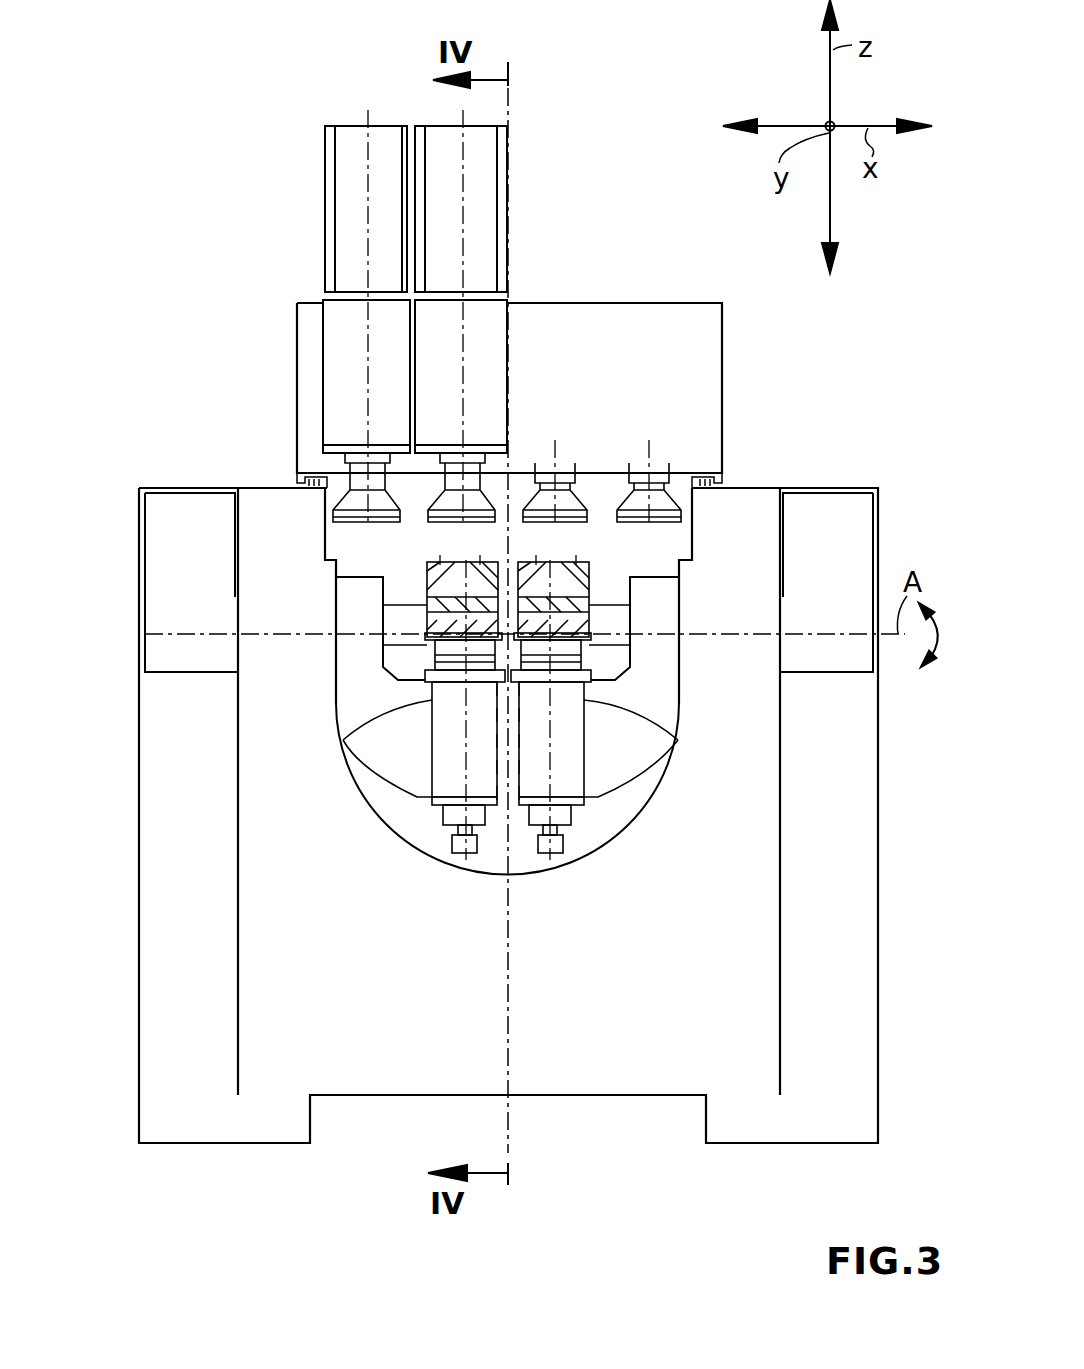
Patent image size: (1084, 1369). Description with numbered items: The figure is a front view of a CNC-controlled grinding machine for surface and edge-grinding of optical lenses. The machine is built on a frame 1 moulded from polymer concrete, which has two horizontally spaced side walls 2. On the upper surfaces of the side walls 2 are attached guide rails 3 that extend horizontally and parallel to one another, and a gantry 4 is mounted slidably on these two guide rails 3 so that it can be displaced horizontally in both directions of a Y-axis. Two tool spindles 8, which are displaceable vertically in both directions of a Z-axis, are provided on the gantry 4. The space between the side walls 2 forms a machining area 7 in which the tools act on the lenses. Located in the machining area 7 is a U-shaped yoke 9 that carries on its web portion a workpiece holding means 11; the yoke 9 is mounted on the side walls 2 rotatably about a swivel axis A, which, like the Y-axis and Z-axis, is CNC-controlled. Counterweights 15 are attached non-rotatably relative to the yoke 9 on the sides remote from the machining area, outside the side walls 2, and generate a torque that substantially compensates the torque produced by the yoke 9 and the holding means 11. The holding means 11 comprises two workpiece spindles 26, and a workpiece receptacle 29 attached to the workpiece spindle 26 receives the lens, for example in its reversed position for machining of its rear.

The frame 1 is at (162, 900).
The side walls 2 is at (258, 490).
The guide rails 3 is at (313, 490).
The gantry 4 is at (597, 340).
The machining area 7 is at (630, 793).
The tool spindles 8 is at (447, 482).
The yoke 9 is at (372, 783).
The workpiece holding means 11 is at (425, 657).
The counterweights 15 is at (178, 530).
The workpiece spindle 26 is at (343, 740).
The workpiece receptacle 29 is at (430, 647).